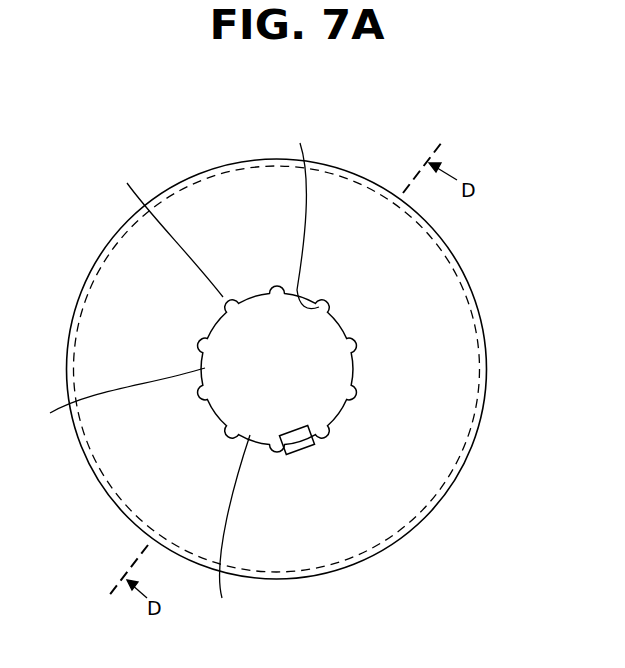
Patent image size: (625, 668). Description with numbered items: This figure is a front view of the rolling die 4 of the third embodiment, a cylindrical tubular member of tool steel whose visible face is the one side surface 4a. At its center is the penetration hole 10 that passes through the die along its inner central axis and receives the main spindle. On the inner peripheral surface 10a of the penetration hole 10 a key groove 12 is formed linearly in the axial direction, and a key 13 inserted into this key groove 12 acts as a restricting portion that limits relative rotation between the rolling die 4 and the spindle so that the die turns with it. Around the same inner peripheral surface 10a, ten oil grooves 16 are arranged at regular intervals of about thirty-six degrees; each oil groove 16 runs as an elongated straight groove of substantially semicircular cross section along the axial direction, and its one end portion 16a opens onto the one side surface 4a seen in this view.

The rolling die 4 is at (457, 241).
The one side surface 4a is at (413, 328).
The penetration hole 10 is at (303, 395).
The inner peripheral surface 10a is at (350, 400).
The key groove 12 is at (307, 450).
The key 13 is at (303, 431).
The oil groove 16 is at (177, 375).
The one end portion 16a is at (184, 370).